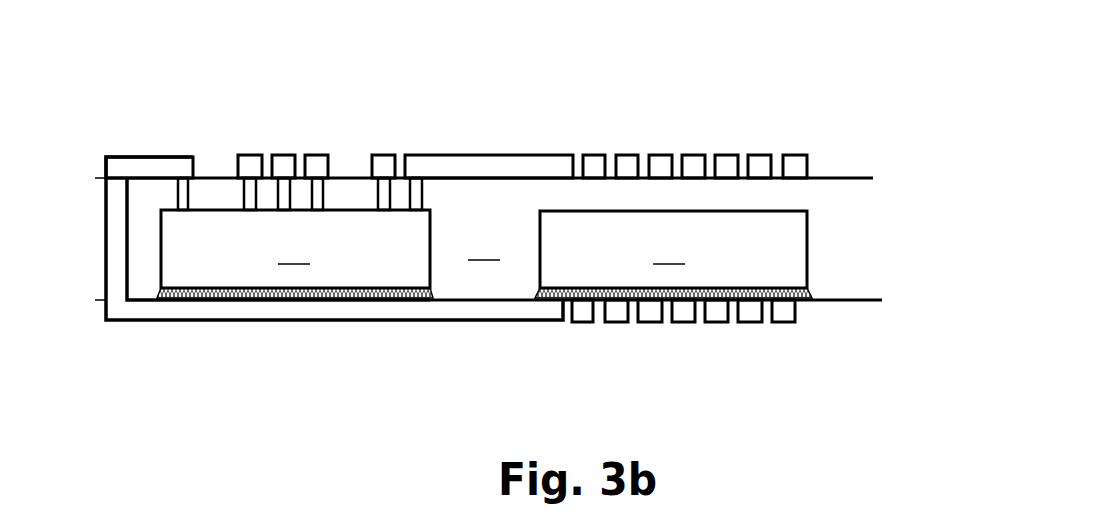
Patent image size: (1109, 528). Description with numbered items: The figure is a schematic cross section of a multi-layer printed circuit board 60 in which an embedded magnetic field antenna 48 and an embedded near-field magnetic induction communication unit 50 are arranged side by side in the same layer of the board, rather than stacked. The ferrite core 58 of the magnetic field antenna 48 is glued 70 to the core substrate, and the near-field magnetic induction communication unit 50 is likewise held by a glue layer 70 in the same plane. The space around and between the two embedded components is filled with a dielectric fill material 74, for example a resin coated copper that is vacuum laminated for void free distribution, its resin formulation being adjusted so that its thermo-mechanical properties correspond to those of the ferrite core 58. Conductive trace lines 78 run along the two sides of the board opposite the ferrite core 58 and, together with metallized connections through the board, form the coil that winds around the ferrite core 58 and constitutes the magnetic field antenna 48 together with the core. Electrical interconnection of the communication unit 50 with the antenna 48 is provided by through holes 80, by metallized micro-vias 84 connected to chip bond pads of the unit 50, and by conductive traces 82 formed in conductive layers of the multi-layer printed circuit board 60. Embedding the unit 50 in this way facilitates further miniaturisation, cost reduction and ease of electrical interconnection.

The magnetic field antenna 48 is at (840, 253).
The near-field magnetic induction communication unit 50 is at (333, 245).
The ferrite core 58 is at (673, 249).
The multi-layer printed circuit board 60 is at (788, 83).
The glue 70 is at (400, 297).
The dielectric fill material 74 is at (485, 239).
The conductive trace lines 78 is at (797, 165).
The through holes 80 is at (113, 190).
The conductive traces 82 is at (186, 153).
The metallized micro-vias 84 is at (181, 193).